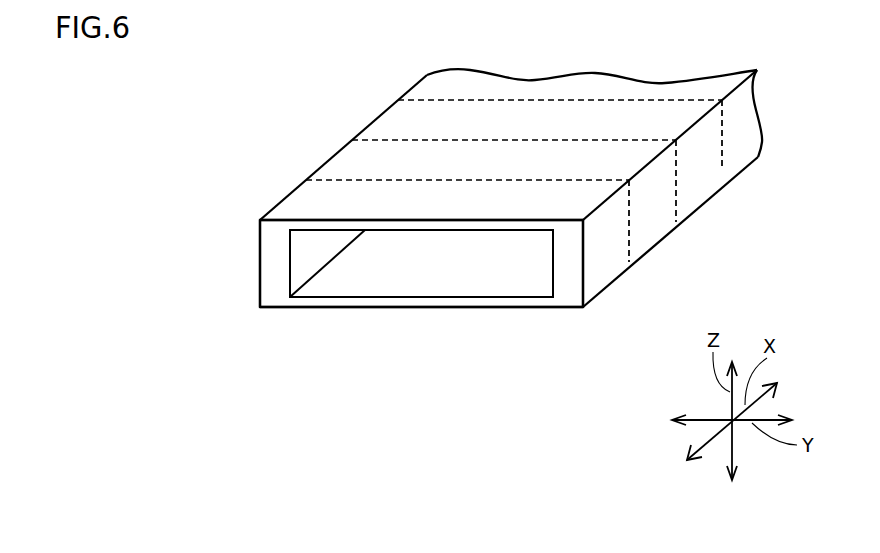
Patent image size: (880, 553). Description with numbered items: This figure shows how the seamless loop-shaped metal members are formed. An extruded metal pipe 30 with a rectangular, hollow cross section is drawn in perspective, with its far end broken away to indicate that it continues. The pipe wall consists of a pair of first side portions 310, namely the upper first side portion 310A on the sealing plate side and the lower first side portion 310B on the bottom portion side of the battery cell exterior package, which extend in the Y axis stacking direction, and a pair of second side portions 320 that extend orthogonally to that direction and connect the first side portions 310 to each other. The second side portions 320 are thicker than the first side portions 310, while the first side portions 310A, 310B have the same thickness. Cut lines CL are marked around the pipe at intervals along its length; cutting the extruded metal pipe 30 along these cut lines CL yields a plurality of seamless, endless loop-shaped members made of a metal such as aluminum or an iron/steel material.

The extruded metal pipe 30 is at (337, 98).
The first side portions 310 is at (127, 225).
The first side portion 310A is at (327, 203).
The first side portion 310B is at (327, 309).
The second side portions 320 is at (260, 266).
The cut lines CL is at (628, 250).